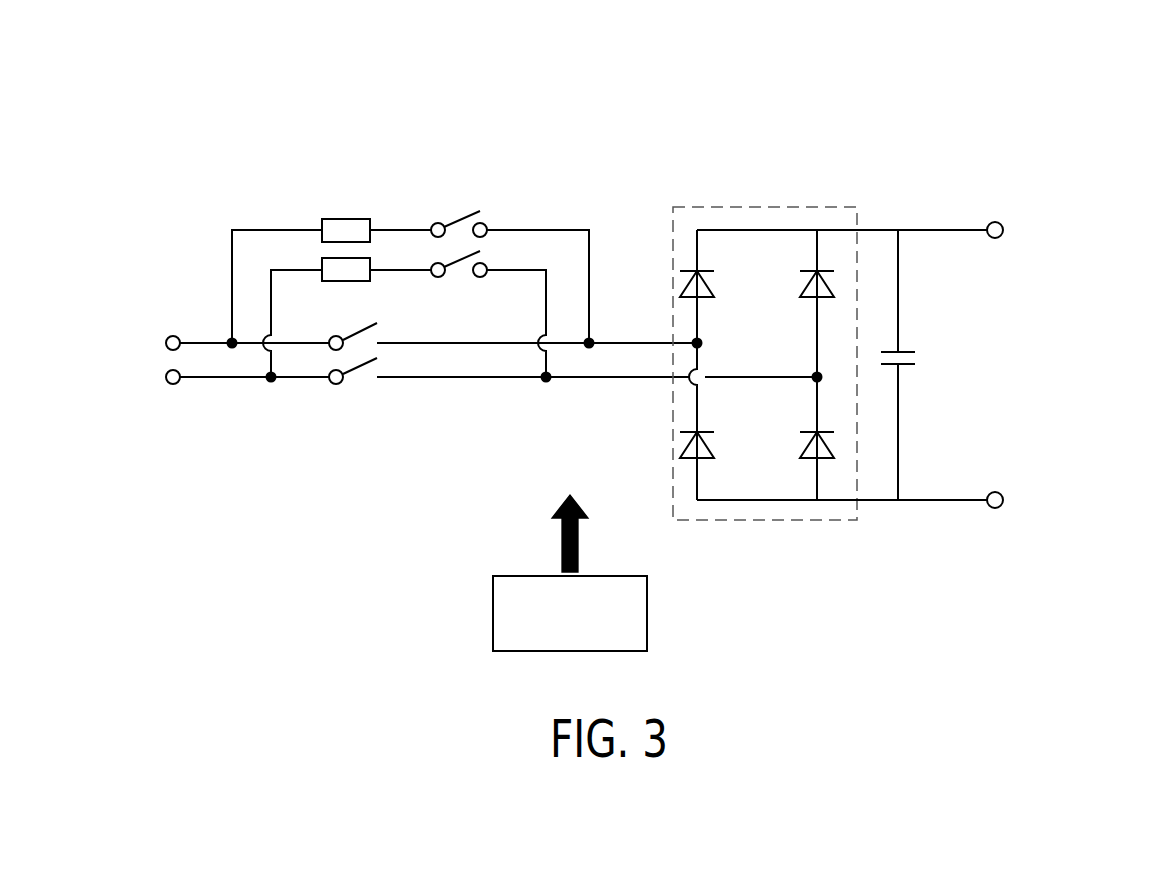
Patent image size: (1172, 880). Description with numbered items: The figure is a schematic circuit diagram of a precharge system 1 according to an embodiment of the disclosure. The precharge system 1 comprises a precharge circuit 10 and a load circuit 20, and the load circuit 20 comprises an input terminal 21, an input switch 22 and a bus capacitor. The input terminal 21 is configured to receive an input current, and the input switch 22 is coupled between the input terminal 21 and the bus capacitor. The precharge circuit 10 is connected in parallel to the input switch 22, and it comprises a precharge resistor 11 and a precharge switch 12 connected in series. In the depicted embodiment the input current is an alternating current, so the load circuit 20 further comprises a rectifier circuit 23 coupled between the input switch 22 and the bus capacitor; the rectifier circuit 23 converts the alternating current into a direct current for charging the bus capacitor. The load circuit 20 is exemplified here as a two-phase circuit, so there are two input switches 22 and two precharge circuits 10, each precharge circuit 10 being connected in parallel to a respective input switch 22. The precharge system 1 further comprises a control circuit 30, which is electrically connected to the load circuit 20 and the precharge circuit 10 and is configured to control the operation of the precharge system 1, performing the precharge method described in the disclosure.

The precharge system 1 is at (1148, 98).
The precharge circuit 10 is at (542, 197).
The precharge resistor 11 is at (343, 218).
The precharge switch 12 is at (460, 262).
The load circuit 20 is at (890, 157).
The input terminal 21 is at (168, 338).
The input switch 22 is at (332, 338).
The rectifier circuit 23 is at (763, 521).
The control circuit 30 is at (648, 607).